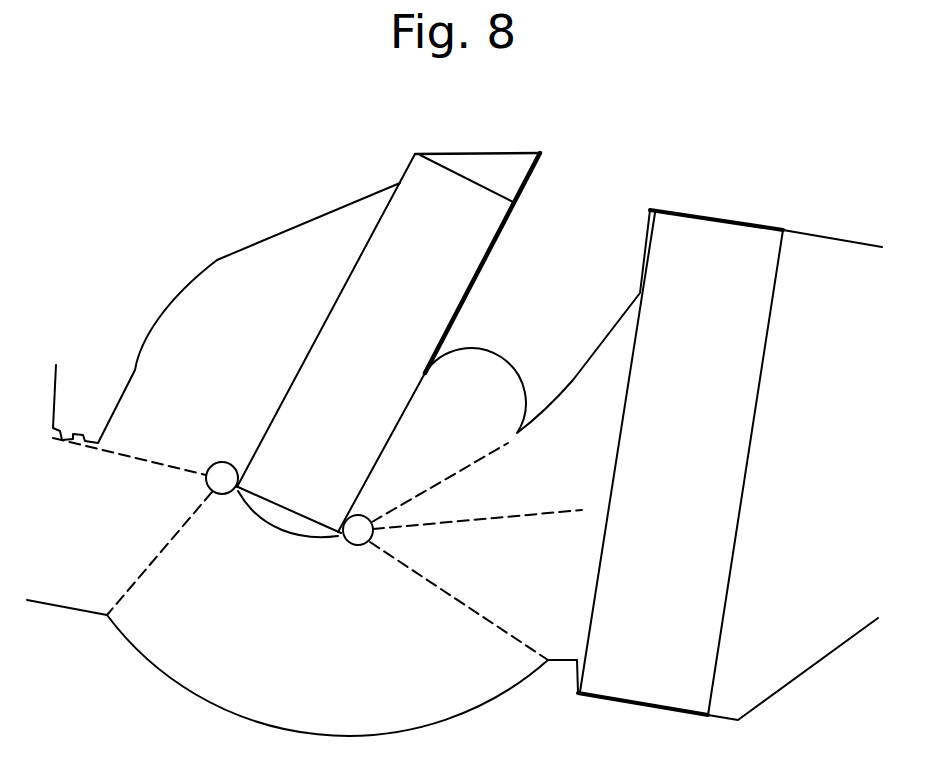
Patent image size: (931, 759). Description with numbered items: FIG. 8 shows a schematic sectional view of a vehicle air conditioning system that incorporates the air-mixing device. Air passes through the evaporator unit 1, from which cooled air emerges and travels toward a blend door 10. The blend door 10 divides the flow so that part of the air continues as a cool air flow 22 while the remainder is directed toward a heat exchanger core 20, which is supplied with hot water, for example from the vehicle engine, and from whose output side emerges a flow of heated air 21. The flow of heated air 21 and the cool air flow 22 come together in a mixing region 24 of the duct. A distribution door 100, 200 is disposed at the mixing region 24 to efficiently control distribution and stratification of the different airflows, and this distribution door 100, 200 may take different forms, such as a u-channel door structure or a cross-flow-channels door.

The evaporator unit 1 is at (707, 366).
The blend door 10 is at (438, 472).
The heat exchanger core 20 is at (425, 293).
The flow of heated air 21 is at (332, 275).
The cool air flow 22 is at (254, 596).
The mixing region 24 is at (100, 531).
The distribution door 100 is at (148, 452).
The distribution door 200 is at (184, 509).